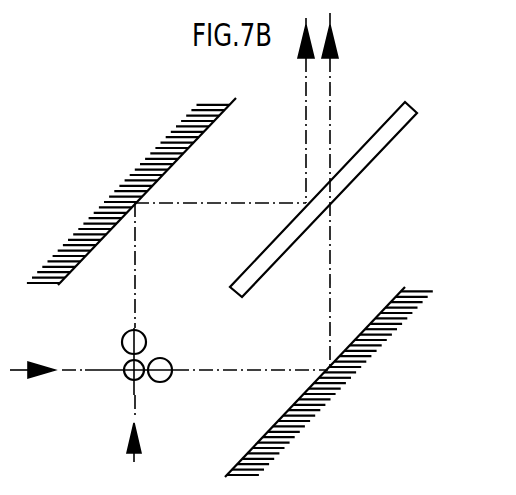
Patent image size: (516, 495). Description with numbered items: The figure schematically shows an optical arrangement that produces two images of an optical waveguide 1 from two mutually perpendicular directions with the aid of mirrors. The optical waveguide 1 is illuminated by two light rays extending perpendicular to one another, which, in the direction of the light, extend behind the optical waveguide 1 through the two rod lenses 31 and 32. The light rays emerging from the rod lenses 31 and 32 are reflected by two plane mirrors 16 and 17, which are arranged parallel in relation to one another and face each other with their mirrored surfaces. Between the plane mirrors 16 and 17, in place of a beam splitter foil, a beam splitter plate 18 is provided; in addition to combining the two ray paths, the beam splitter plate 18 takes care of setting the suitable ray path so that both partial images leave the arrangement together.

The incident light beam 1 is at (127, 383).
The mirror 16 is at (74, 268).
The mirror 17 is at (376, 315).
The beam splitter plate 18 is at (417, 114).
The first partial beam 31 is at (146, 334).
The second partial beam 32 is at (167, 382).